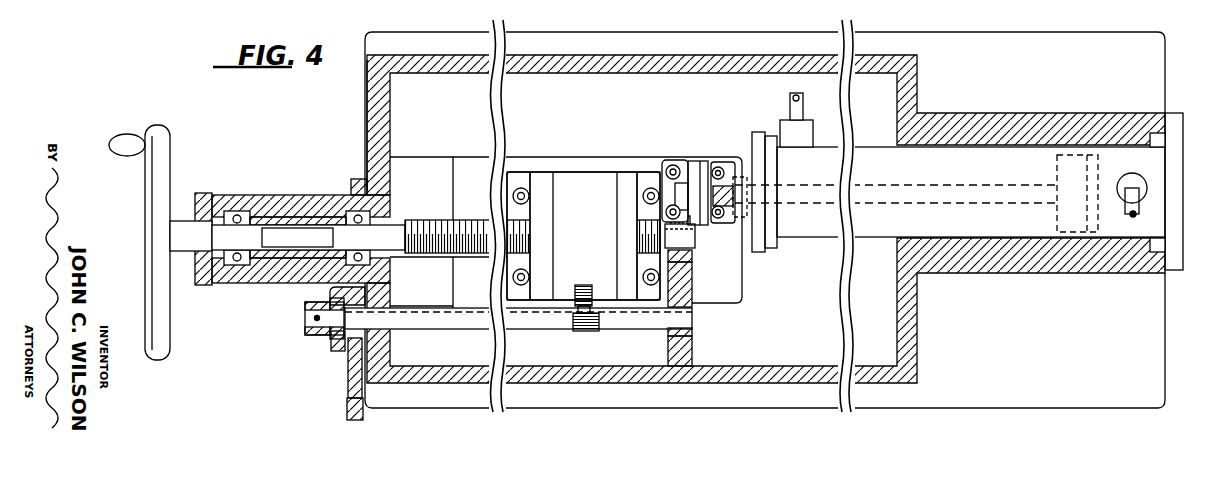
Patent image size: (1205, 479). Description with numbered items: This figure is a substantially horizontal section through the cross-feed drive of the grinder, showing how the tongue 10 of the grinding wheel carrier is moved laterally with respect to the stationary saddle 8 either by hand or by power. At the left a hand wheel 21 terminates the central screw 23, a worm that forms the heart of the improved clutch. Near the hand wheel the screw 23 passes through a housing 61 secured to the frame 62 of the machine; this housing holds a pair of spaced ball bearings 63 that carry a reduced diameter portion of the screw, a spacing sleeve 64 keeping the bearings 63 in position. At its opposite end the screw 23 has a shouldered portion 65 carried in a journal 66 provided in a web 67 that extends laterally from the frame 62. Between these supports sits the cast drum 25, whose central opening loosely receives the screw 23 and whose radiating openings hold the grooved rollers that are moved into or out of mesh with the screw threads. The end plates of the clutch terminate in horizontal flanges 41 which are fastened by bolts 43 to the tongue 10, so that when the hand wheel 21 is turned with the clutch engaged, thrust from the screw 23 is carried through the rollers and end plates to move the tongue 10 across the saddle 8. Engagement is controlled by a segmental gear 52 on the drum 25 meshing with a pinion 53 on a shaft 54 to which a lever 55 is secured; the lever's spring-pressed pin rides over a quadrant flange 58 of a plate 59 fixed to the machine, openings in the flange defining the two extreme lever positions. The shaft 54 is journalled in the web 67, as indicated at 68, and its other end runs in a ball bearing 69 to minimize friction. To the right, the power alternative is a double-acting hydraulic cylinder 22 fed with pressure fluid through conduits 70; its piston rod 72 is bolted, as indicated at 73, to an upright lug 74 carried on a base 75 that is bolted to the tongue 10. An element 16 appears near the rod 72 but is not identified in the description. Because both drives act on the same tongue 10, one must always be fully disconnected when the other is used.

The saddle 8 is at (918, 66).
The tongue 10 is at (468, 172).
The clamp stop 16 is at (740, 194).
The hand wheel 21 is at (168, 134).
The hydraulic cylinder 22 is at (984, 184).
The central screw 23 is at (428, 222).
The drum 25 is at (590, 178).
The horizontal flange 41 is at (521, 262).
The bolts 43 is at (522, 188).
The segmental gear 52 is at (585, 284).
The pinion 53 is at (584, 326).
The shaft 54 is at (531, 320).
The lever 55 is at (305, 307).
The quadrant flange 58 is at (347, 405).
The plate 59 is at (348, 370).
The housing 61 is at (298, 195).
The frame 62 is at (367, 100).
The ball bearings 63 is at (340, 195).
The spacing sleeve 64 is at (267, 213).
The shouldered portion 65 is at (683, 240).
The journal 66 is at (690, 252).
The web 67 is at (693, 289).
The journal 68 is at (693, 328).
The ball bearing 69 is at (333, 343).
The conduits 70 is at (796, 103).
The rod 72 is at (708, 198).
The bolt 73 is at (668, 182).
The upright lug 74 is at (692, 165).
The base 75 is at (716, 180).